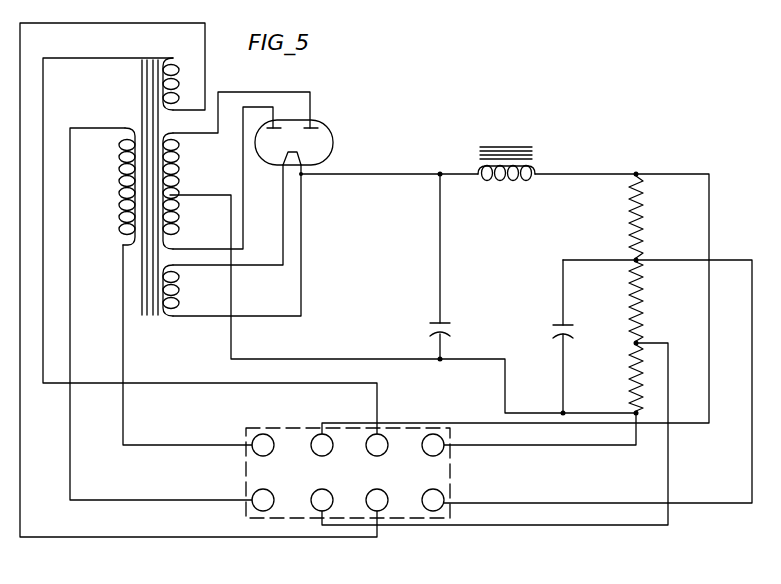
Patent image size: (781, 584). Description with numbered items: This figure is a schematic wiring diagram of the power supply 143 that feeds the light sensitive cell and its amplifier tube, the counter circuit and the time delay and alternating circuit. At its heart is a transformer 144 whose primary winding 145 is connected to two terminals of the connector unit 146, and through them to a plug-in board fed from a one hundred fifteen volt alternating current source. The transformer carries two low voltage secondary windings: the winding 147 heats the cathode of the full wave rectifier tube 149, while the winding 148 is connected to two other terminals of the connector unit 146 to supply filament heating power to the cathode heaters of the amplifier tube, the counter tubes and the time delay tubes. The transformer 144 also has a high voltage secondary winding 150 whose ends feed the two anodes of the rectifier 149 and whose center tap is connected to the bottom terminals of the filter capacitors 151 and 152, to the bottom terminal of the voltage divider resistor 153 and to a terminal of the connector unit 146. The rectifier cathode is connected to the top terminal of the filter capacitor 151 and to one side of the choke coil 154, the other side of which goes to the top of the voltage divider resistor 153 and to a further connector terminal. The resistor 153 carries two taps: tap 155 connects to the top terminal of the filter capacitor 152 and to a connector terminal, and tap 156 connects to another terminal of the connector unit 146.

The power supply 143 is at (420, 122).
The transformer 144 is at (150, 78).
The primary winding 145 is at (118, 164).
The connector unit 146 is at (436, 519).
The low voltage secondary winding 147 is at (180, 296).
The low voltage secondary winding 148 is at (184, 84).
The full wave rectifier tube 149 is at (333, 128).
The high voltage secondary winding 150 is at (178, 187).
The filter capacitor 151 is at (451, 329).
The filter capacitor 152 is at (552, 330).
The voltage divider resistor 153 is at (626, 388).
The choke coil 154 is at (537, 168).
The tap 155 is at (640, 256).
The tap 156 is at (640, 342).